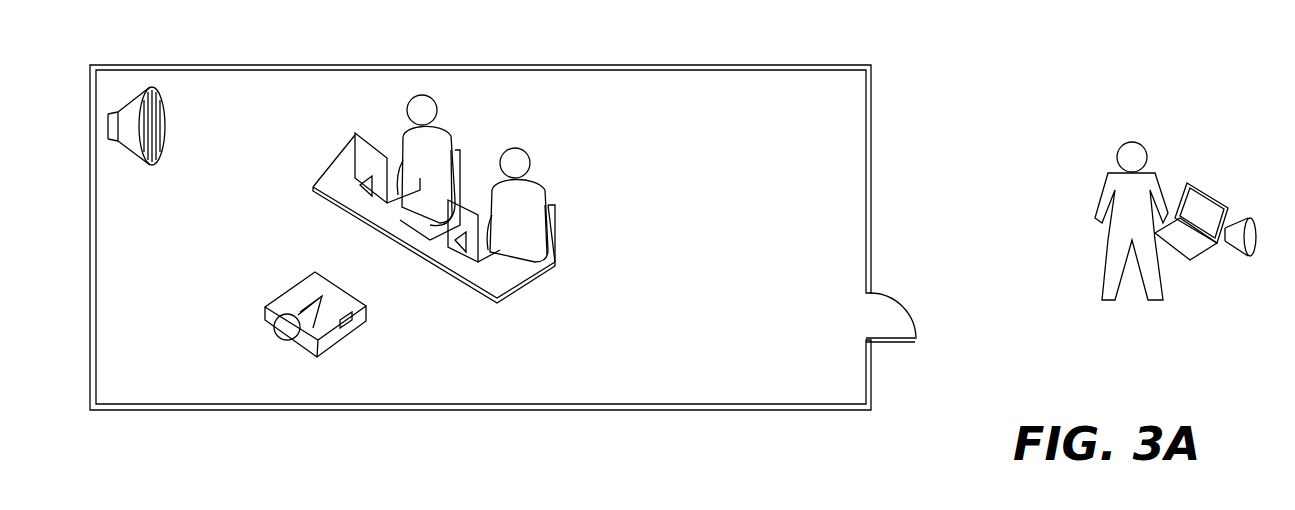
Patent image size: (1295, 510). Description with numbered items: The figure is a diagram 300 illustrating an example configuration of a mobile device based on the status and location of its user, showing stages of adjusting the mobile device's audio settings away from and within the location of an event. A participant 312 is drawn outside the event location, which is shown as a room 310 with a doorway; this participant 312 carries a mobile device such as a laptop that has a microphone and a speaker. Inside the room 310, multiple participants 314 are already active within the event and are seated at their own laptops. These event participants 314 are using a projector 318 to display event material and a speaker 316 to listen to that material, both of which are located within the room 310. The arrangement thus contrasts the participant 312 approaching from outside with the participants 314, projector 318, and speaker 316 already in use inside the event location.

The diagram 300 is at (1146, 76).
The room 310 is at (890, 99).
The participant 312 is at (1171, 163).
The participants 314 is at (505, 127).
The speaker 316 is at (181, 105).
The projector 318 is at (376, 297).